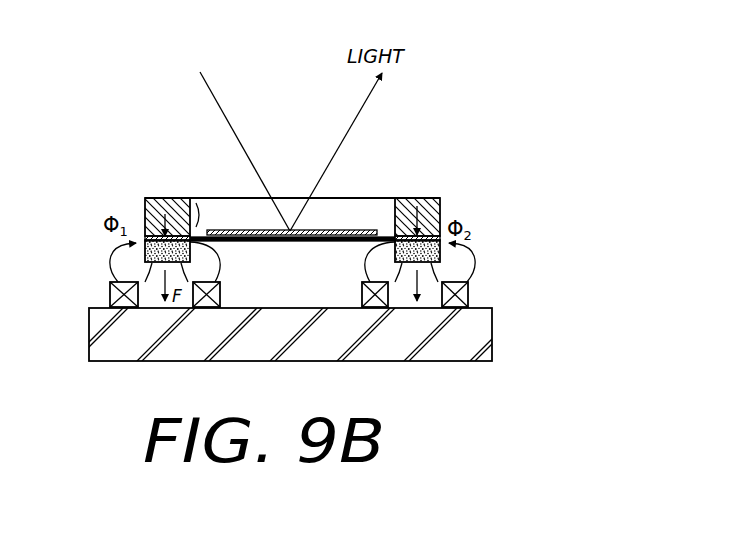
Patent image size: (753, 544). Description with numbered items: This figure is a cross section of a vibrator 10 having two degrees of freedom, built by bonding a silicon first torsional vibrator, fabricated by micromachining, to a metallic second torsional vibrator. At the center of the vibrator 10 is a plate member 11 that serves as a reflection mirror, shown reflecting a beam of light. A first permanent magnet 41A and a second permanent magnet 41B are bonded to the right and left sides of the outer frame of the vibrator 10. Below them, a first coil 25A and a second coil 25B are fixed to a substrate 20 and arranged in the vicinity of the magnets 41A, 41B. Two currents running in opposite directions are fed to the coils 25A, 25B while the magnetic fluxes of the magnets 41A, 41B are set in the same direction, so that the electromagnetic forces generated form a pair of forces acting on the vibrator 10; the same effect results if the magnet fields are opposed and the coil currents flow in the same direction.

The vibrator 10 is at (417, 210).
The plate member 11 is at (333, 230).
The substrate 20 is at (475, 335).
The first coil 25A is at (110, 295).
The second coil 25B is at (470, 295).
The first permanent magnet 41A is at (145, 256).
The second permanent magnet 41B is at (440, 256).